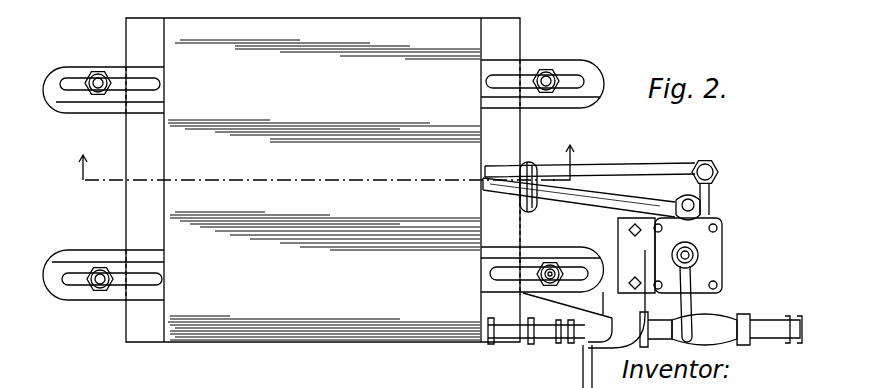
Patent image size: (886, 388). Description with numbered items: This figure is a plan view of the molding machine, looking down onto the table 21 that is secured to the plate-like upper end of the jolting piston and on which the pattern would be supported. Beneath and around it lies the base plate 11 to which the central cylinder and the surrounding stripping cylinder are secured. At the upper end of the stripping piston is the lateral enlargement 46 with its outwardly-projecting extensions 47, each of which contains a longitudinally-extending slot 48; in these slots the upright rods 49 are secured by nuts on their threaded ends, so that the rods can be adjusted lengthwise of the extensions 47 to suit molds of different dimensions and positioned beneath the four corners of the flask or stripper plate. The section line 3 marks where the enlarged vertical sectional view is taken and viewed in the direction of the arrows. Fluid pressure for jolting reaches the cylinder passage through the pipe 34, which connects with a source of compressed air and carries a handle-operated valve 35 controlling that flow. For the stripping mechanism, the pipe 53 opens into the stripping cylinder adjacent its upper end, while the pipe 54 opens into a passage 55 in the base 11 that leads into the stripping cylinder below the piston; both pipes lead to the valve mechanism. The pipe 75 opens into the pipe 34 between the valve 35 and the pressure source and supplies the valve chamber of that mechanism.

The section line 3— 3 is at (318, 169).
The base plate 11 is at (145, 318).
The table 21 is at (303, 123).
The pipe 34 is at (512, 335).
The handle-operated valve 35 is at (580, 347).
The lateral enlargement 46 is at (566, 268).
The extensions 47 is at (82, 108).
The slot 48 is at (70, 80).
The upright rods 49 is at (98, 86).
The pipe 53 is at (622, 195).
The pipe 54 is at (506, 172).
The passage 55 is at (510, 196).
The pipe 75 is at (700, 302).